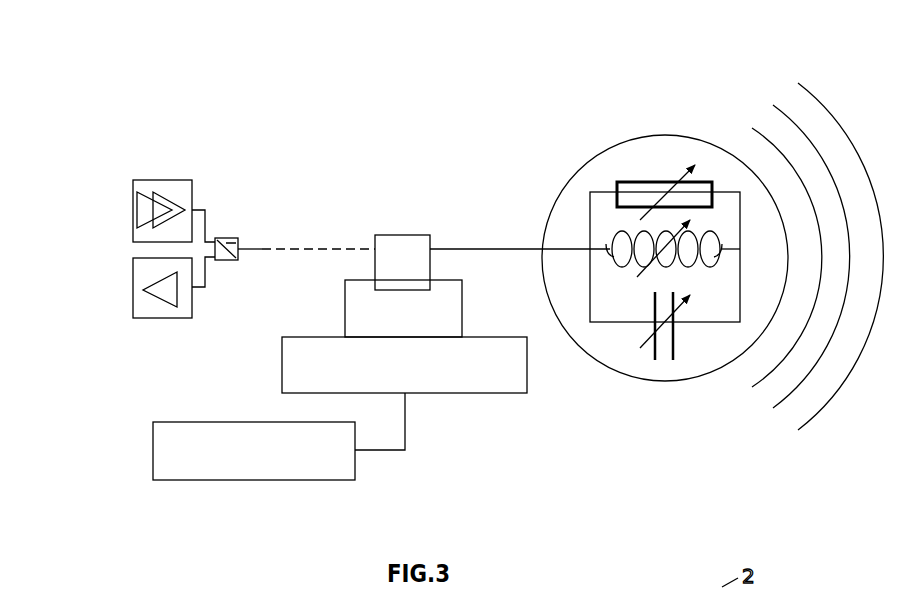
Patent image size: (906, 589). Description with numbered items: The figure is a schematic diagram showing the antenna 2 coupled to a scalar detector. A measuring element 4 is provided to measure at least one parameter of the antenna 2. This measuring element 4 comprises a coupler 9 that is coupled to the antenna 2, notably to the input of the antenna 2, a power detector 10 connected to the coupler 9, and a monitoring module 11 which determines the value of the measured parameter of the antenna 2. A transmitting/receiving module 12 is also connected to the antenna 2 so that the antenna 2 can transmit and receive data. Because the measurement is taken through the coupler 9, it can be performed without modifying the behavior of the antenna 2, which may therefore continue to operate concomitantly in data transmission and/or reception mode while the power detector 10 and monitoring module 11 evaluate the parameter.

The antenna 2 is at (572, 155).
The measuring element 4 is at (250, 365).
The coupler 9 is at (387, 233).
The power detector 10 is at (481, 388).
The monitoring module 11 is at (185, 478).
The transmitting/receiving module 12 is at (110, 218).